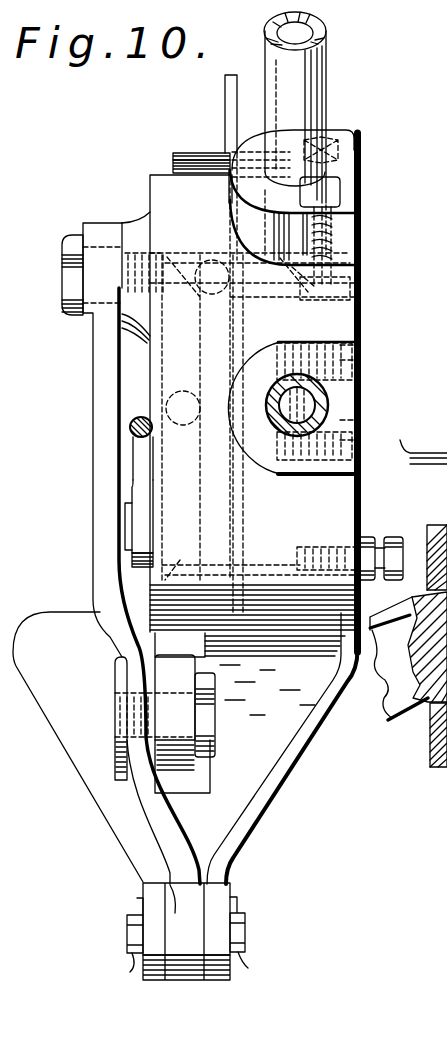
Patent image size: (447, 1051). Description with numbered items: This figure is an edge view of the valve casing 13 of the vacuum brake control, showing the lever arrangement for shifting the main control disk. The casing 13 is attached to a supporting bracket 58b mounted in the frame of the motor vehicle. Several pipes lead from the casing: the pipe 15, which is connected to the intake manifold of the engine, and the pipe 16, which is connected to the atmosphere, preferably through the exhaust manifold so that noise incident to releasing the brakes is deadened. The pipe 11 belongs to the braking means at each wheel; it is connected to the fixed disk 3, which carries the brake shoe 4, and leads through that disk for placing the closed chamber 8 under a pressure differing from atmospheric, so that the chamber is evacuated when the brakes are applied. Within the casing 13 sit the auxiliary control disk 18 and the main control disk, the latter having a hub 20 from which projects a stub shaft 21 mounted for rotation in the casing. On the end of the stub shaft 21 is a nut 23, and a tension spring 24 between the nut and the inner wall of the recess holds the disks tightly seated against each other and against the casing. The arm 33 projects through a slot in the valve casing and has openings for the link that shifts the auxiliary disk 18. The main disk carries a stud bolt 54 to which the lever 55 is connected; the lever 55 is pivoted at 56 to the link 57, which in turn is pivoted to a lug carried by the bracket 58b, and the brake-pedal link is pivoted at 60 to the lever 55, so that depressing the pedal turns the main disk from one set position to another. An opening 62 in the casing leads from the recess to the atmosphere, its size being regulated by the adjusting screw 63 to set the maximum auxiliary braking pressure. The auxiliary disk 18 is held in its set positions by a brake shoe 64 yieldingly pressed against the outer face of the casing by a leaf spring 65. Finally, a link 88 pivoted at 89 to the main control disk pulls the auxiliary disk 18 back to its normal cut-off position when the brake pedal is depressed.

The disk 3 is at (407, 531).
The brake shoe 4 is at (446, 293).
The closed chamber 8 is at (423, 623).
The pipe 11 is at (446, 433).
The valve casing 13 is at (337, 510).
The pipe 15 is at (322, 60).
The pipe 16 is at (310, 407).
The auxiliary control disk 18 is at (222, 242).
The hub 20 is at (305, 345).
The stub shaft 21 is at (314, 387).
The nut 23 is at (363, 343).
The tension spring 24 is at (360, 363).
The arm 33 is at (225, 95).
The stud bolt 54 is at (62, 262).
The lever 55 is at (98, 390).
The pivot 56 is at (250, 920).
The link 57 is at (157, 960).
The bracket 58b is at (252, 767).
The pivot 60 is at (103, 700).
The opening 62 is at (362, 282).
The adjusting screw 63 is at (361, 150).
The brake shoe 64 is at (173, 170).
The leaf spring 65 is at (183, 152).
The link 88 is at (137, 458).
The pivot 89 is at (130, 530).